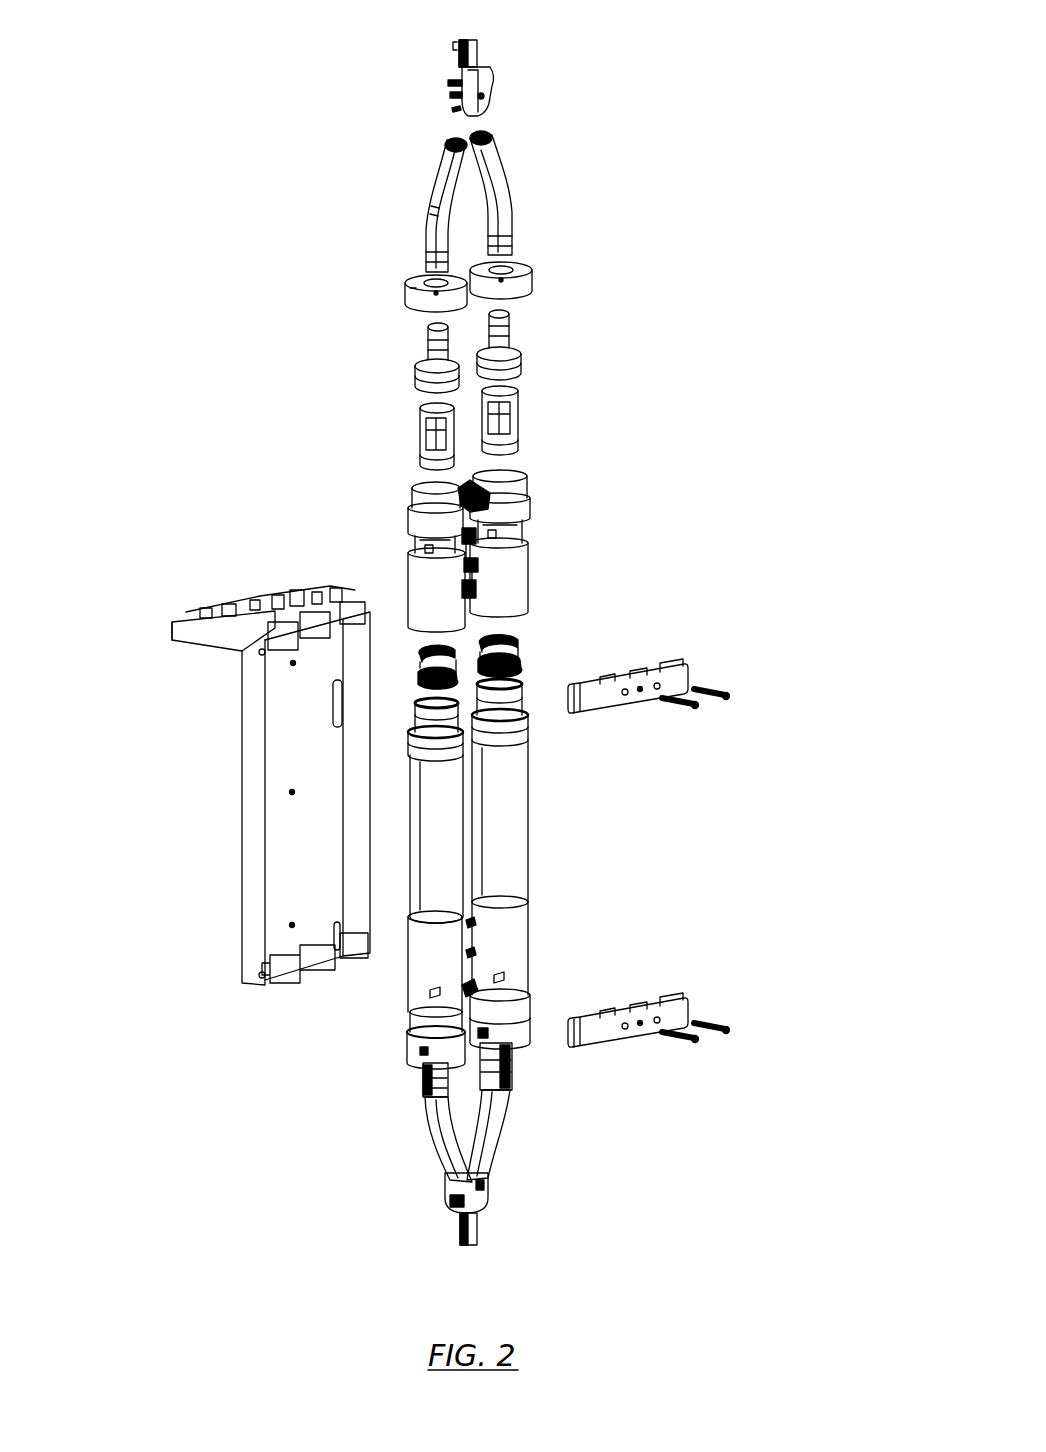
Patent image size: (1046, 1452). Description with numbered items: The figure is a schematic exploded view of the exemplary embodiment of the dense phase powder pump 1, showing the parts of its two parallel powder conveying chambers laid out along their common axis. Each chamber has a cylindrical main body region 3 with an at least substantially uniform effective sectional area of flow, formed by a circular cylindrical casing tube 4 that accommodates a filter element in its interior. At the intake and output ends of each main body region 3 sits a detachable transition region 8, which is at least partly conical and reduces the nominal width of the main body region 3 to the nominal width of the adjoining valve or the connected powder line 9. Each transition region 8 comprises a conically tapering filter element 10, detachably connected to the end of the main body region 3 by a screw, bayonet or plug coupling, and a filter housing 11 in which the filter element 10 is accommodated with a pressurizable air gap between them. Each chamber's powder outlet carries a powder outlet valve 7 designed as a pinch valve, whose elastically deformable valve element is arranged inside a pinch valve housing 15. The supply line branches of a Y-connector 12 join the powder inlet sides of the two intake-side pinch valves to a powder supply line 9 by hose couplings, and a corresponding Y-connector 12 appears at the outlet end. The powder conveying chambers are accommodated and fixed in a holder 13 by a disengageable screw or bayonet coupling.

The dense phase powder pump 1 is at (180, 200).
The main body region 3 is at (422, 880).
The casing tube 4 is at (483, 802).
The powder outlet valve 7 is at (430, 432).
The transition region 8 is at (427, 953).
The powder line 9 is at (458, 57).
The filter element 10 is at (447, 653).
The filter housing 11 is at (505, 587).
The Y-connector 12 is at (477, 85).
The holder 13 is at (288, 827).
The pinch valve housing 15 is at (445, 577).